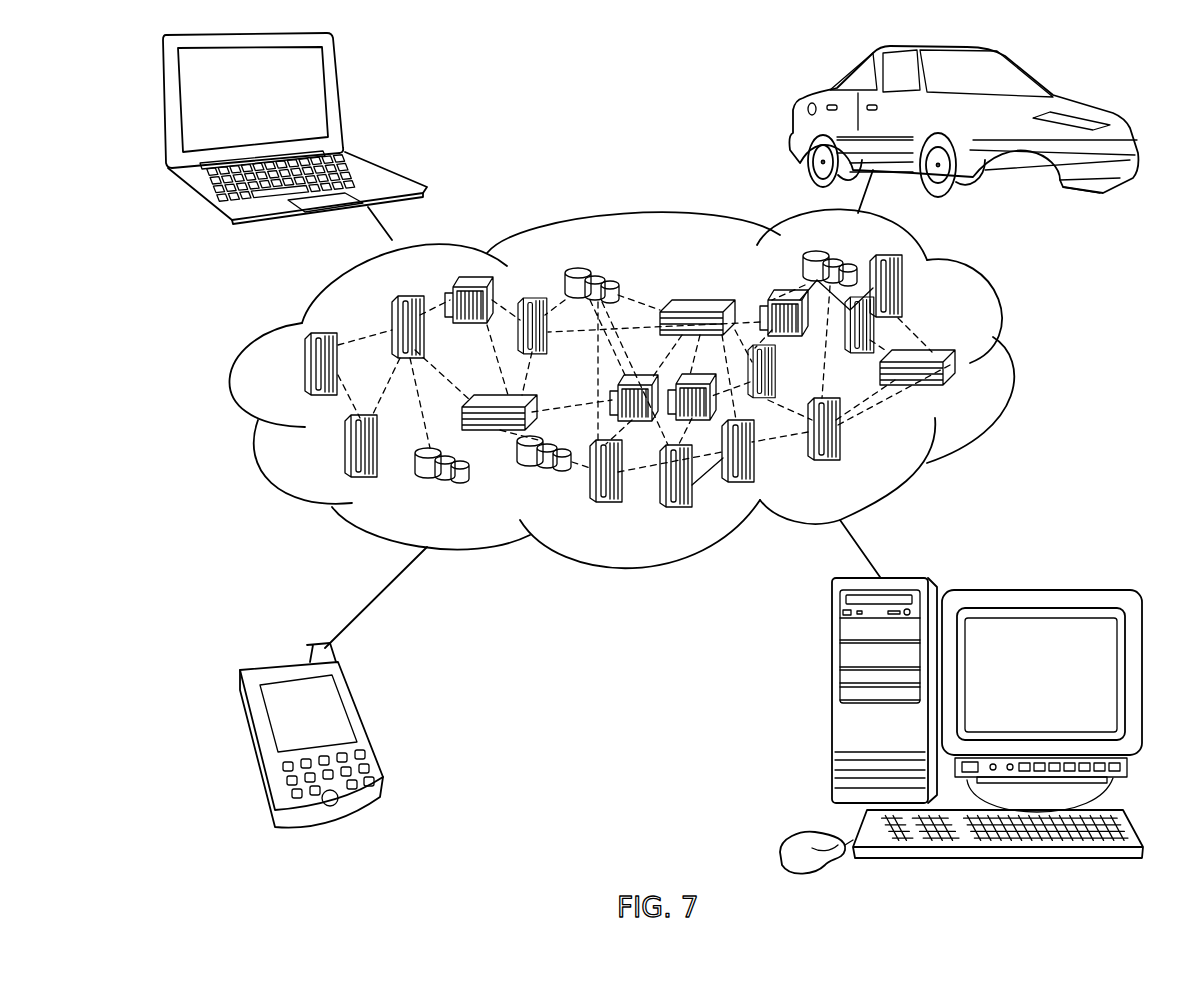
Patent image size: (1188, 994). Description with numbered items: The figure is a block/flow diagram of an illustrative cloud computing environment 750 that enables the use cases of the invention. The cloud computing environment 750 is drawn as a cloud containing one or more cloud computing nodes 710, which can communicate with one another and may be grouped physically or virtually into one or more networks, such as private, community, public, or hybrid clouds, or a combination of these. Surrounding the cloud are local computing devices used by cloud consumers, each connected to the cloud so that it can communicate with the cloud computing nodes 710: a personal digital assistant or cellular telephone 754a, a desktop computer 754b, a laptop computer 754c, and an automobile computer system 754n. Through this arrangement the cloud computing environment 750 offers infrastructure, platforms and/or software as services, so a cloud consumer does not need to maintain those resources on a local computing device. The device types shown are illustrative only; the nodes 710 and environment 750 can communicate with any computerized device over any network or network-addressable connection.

The cloud computing environment 750 is at (960, 265).
The cloud computing nodes 710 is at (970, 385).
The personal digital assistant or cellular telephone 754a is at (364, 710).
The desktop computer 754b is at (832, 707).
The laptop computer 754c is at (337, 87).
The automobile computer system 754n is at (805, 100).